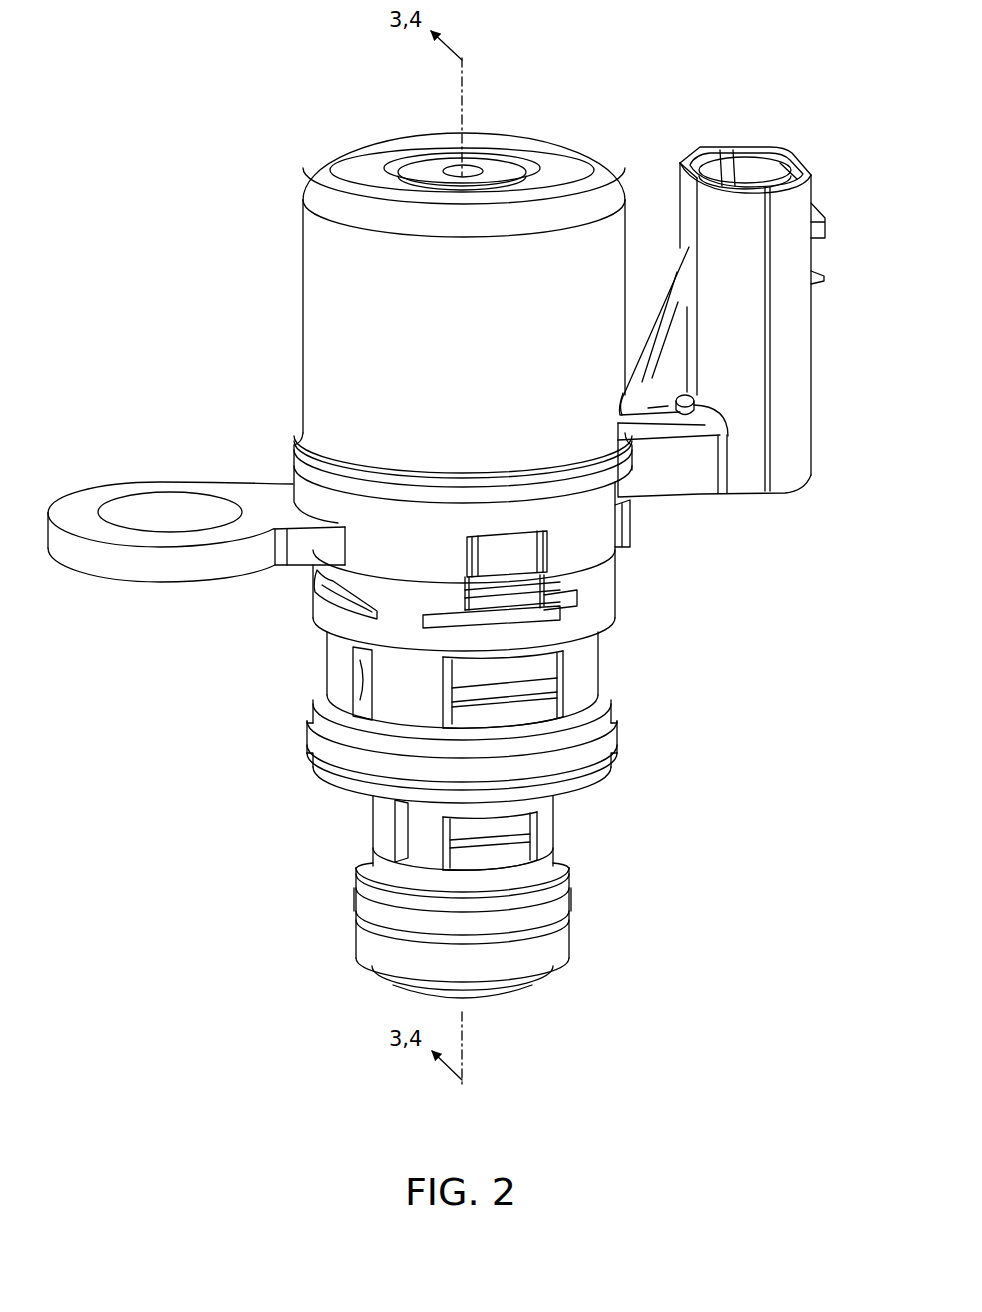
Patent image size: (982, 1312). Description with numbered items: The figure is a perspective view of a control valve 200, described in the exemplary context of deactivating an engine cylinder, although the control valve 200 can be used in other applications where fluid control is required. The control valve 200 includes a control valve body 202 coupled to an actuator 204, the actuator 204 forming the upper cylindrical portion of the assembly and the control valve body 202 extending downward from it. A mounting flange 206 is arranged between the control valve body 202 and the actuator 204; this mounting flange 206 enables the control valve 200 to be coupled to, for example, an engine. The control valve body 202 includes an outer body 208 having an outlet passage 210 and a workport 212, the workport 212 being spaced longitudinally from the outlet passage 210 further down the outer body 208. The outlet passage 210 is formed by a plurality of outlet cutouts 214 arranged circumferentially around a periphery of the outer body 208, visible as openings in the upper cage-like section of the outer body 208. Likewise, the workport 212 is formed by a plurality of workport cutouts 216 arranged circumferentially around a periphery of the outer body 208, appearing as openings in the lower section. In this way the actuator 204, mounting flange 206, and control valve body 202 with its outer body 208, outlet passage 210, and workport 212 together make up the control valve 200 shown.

The control valve 200 is at (268, 98).
The control valve body 202 is at (719, 632).
The actuator 204 is at (268, 288).
The mounting flange 206 is at (77, 503).
The outer body 208 is at (619, 698).
The outlet passage 210 is at (310, 652).
The workport 212 is at (574, 814).
The outlet cutouts 214 is at (335, 667).
The workport cutouts 216 is at (380, 823).